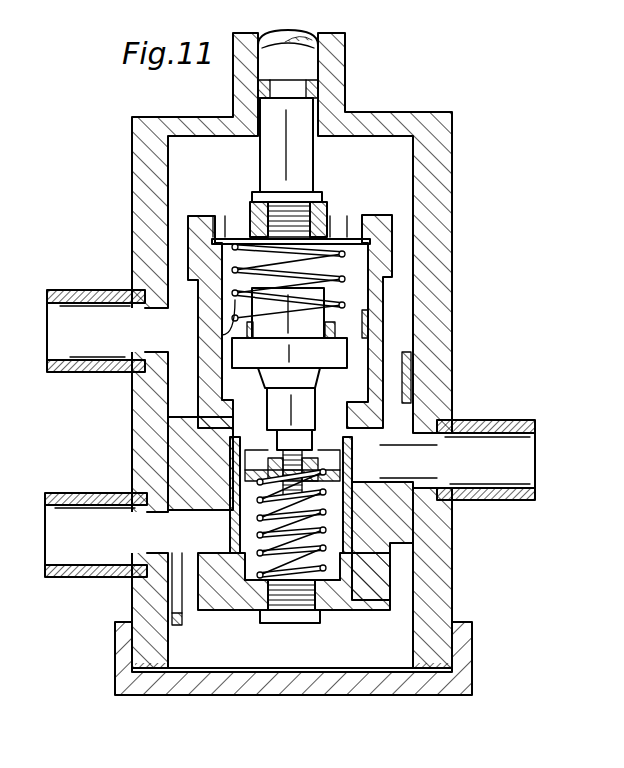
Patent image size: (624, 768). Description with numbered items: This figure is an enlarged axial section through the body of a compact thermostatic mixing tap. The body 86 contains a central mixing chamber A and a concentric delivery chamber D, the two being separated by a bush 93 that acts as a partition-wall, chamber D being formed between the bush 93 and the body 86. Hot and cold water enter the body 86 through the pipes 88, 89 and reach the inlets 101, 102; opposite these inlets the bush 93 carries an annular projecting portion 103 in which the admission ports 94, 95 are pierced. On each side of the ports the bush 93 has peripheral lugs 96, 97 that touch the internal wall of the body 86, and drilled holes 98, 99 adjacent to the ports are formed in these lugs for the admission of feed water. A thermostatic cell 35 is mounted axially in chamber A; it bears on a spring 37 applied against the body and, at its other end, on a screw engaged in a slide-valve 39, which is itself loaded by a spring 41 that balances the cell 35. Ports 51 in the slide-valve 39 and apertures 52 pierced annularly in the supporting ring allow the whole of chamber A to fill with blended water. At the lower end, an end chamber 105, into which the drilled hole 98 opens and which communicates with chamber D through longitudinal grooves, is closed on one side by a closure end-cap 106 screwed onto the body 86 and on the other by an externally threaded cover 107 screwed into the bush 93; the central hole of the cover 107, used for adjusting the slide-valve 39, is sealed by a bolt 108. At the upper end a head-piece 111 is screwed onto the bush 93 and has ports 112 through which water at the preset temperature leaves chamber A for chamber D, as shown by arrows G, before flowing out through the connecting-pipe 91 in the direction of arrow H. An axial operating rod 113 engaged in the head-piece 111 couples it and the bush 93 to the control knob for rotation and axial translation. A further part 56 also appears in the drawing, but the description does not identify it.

The body 86 is at (128, 152).
The pipe 88 is at (66, 578).
The pipe 89 is at (525, 418).
The connecting-pipe 91 is at (75, 286).
The bush 93 is at (195, 365).
The admission port 94 is at (187, 533).
The admission port 95 is at (397, 475).
The peripheral lug 96 is at (183, 622).
The peripheral lug 97 is at (402, 358).
The drilled hole 98 is at (172, 587).
The drilled hole 99 is at (406, 400).
The inlet 101 is at (155, 547).
The inlet 102 is at (430, 468).
The annular projecting portion 103 is at (183, 472).
The end chamber 105 is at (430, 618).
The closure end-cap 106 is at (120, 655).
The externally threaded cover 107 is at (356, 604).
The bolt 108 is at (300, 616).
The head-piece 111 is at (376, 212).
The ports 112 is at (244, 212).
The axial operating rod 113 is at (298, 110).
The thermostatic cell 35 is at (273, 353).
The spring 37 is at (392, 255).
The slide-valve 39 is at (356, 543).
The spring 41 is at (260, 577).
The ports 51 is at (340, 455).
The apertures 52 is at (215, 305).
The valve seat 56 is at (362, 326).
The mixing chamber A is at (410, 376).
The delivery chamber D is at (400, 296).
The arrows G is at (223, 248).
The arrow H is at (178, 335).